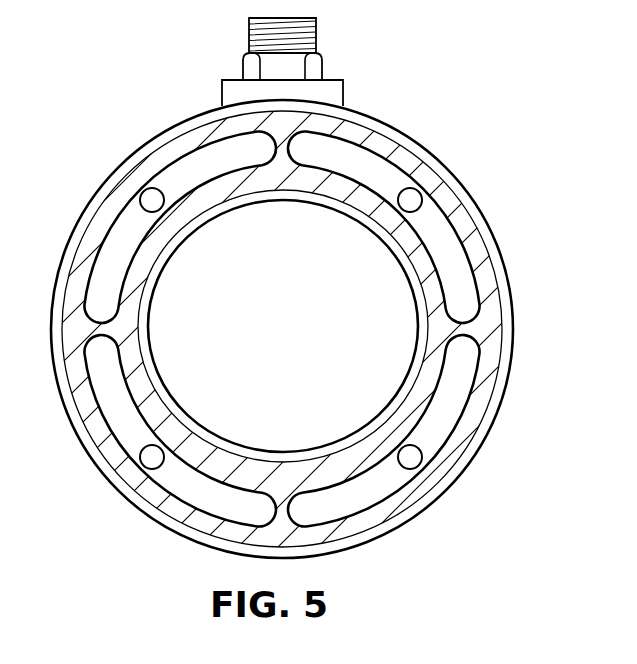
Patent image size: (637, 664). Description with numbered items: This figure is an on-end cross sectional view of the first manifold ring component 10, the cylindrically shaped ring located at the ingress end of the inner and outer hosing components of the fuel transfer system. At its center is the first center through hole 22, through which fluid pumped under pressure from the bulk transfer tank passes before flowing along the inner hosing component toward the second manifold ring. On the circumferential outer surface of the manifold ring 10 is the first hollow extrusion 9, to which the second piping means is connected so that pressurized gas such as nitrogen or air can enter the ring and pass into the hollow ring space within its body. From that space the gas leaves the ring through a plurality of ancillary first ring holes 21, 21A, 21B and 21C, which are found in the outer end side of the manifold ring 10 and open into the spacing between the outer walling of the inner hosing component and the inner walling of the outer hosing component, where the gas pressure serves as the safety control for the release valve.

The first hollow extrusion 9 is at (317, 33).
The first manifold ring component 10 is at (64, 398).
The ancillary first ring hole 21 is at (410, 457).
The ancillary first ring hole 21A is at (410, 200).
The ancillary first ring hole 21B is at (152, 200).
The ancillary first ring hole 21C is at (152, 458).
The first center through hole 22 is at (292, 332).